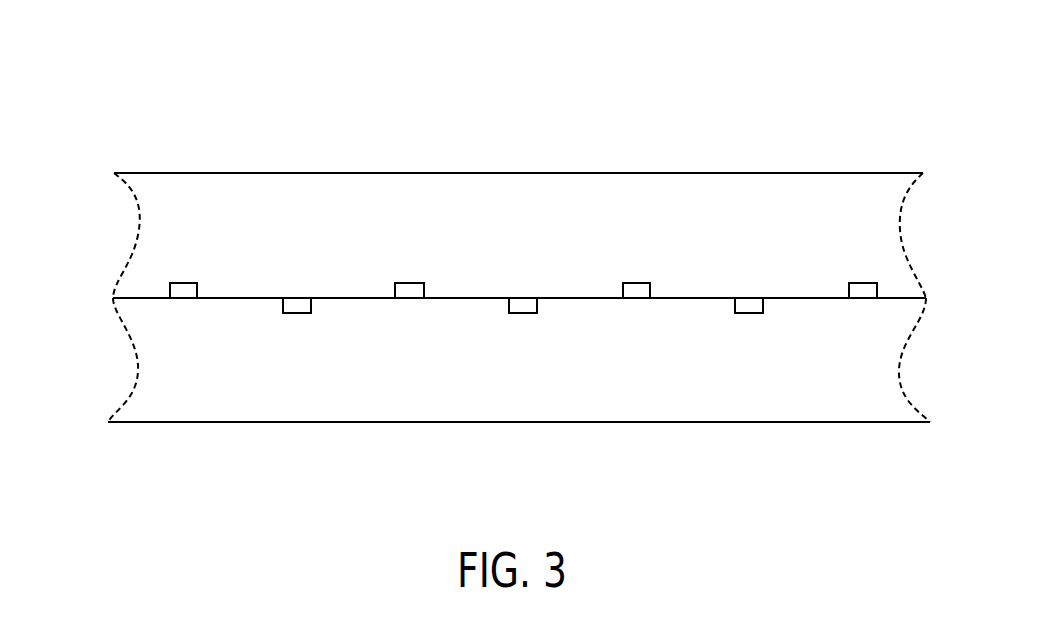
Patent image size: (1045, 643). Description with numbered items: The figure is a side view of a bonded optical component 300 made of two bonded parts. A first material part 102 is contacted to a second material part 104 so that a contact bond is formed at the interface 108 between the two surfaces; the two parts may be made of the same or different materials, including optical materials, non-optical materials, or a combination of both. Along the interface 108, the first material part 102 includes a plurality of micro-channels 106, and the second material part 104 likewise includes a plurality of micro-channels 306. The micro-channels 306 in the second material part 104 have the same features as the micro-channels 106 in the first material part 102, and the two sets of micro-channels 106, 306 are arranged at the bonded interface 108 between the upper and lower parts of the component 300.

The bonded optical component 300 is at (645, 86).
The first material part 102 is at (194, 383).
The second material part 104 is at (195, 233).
The micro-channels 106 is at (746, 324).
The interface 108 is at (113, 298).
The micro-channels 306 is at (188, 272).